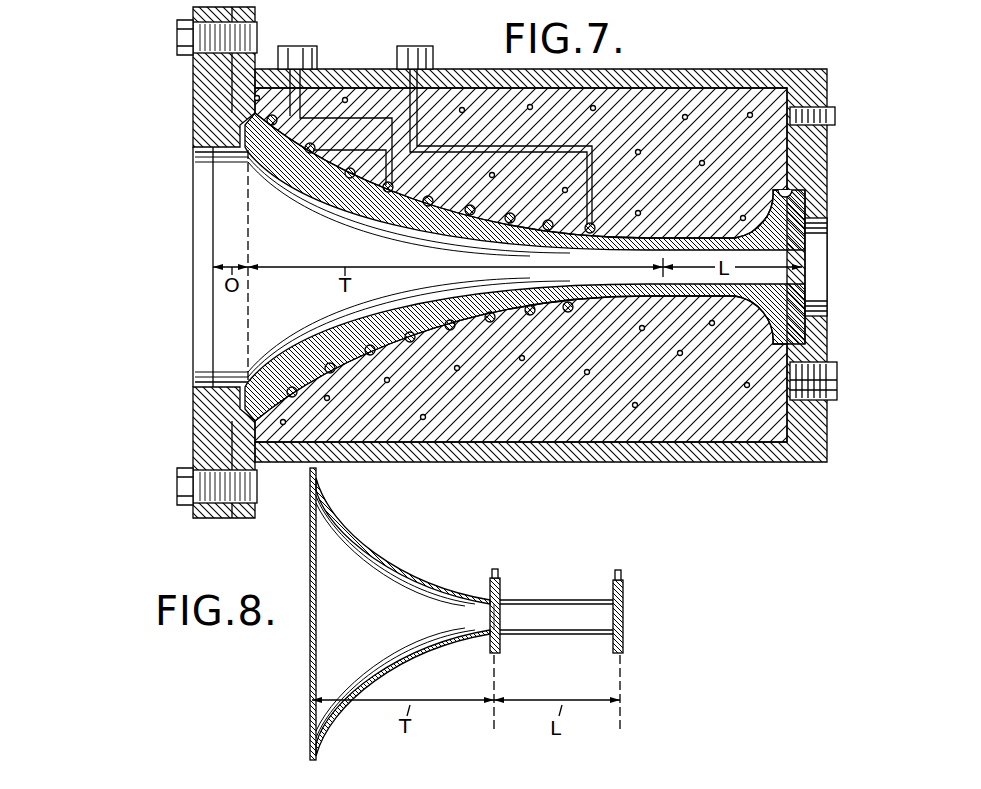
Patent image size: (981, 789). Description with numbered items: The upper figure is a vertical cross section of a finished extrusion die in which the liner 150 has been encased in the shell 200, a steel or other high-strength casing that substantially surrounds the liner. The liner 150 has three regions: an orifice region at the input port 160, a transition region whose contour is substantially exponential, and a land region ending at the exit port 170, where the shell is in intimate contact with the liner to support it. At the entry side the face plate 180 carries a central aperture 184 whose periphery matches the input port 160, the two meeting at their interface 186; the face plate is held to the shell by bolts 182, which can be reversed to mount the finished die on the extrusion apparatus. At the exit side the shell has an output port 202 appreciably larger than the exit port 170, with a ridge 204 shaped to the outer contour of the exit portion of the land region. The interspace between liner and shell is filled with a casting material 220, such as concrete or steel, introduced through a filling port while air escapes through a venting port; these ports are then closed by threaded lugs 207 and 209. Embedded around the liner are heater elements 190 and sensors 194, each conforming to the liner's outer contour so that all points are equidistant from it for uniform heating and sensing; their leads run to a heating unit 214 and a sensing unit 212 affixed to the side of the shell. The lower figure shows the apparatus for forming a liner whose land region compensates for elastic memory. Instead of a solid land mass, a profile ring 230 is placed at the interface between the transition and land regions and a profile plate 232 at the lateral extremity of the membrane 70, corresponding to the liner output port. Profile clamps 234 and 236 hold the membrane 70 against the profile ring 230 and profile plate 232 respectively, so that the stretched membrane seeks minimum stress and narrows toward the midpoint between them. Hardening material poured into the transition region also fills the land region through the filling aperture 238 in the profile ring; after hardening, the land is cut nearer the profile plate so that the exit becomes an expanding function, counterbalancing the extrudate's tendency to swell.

In FIG. 8, the membrane 70 is at (385, 561).
In FIG. 7, the liner 150 is at (680, 240).
In FIG. 7, the input port 160 is at (230, 204).
In FIG. 7, the exit port 170 is at (800, 278).
In FIG. 7, the face plate 180 is at (200, 428).
In FIG. 7, the bolts 182 is at (179, 39).
In FIG. 7, the central aperture 184 is at (202, 313).
In FIG. 7, the interface 186 is at (213, 330).
In FIG. 7, the heater elements 190 is at (279, 125).
In FIG. 7, the sensors 194 is at (316, 146).
In FIG. 7, the shell 200 is at (726, 66).
In FIG. 7, the output port 202 is at (828, 252).
In FIG. 7, the ridge 204 is at (777, 188).
In FIG. 7, the threaded lug 207 is at (839, 371).
In FIG. 7, the threaded lug 209 is at (837, 113).
In FIG. 7, the sensing unit 212 is at (416, 46).
In FIG. 7, the heating unit 214 is at (297, 46).
In FIG. 7, the casting material 220 is at (683, 413).
In FIG. 8, the profile ring 230 is at (480, 617).
In FIG. 8, the profile plate 232 is at (624, 617).
In FIG. 8, the profile clamp 234 is at (501, 594).
In FIG. 8, the profile clamp 236 is at (624, 591).
In FIG. 8, the filling aperture 238 is at (500, 617).